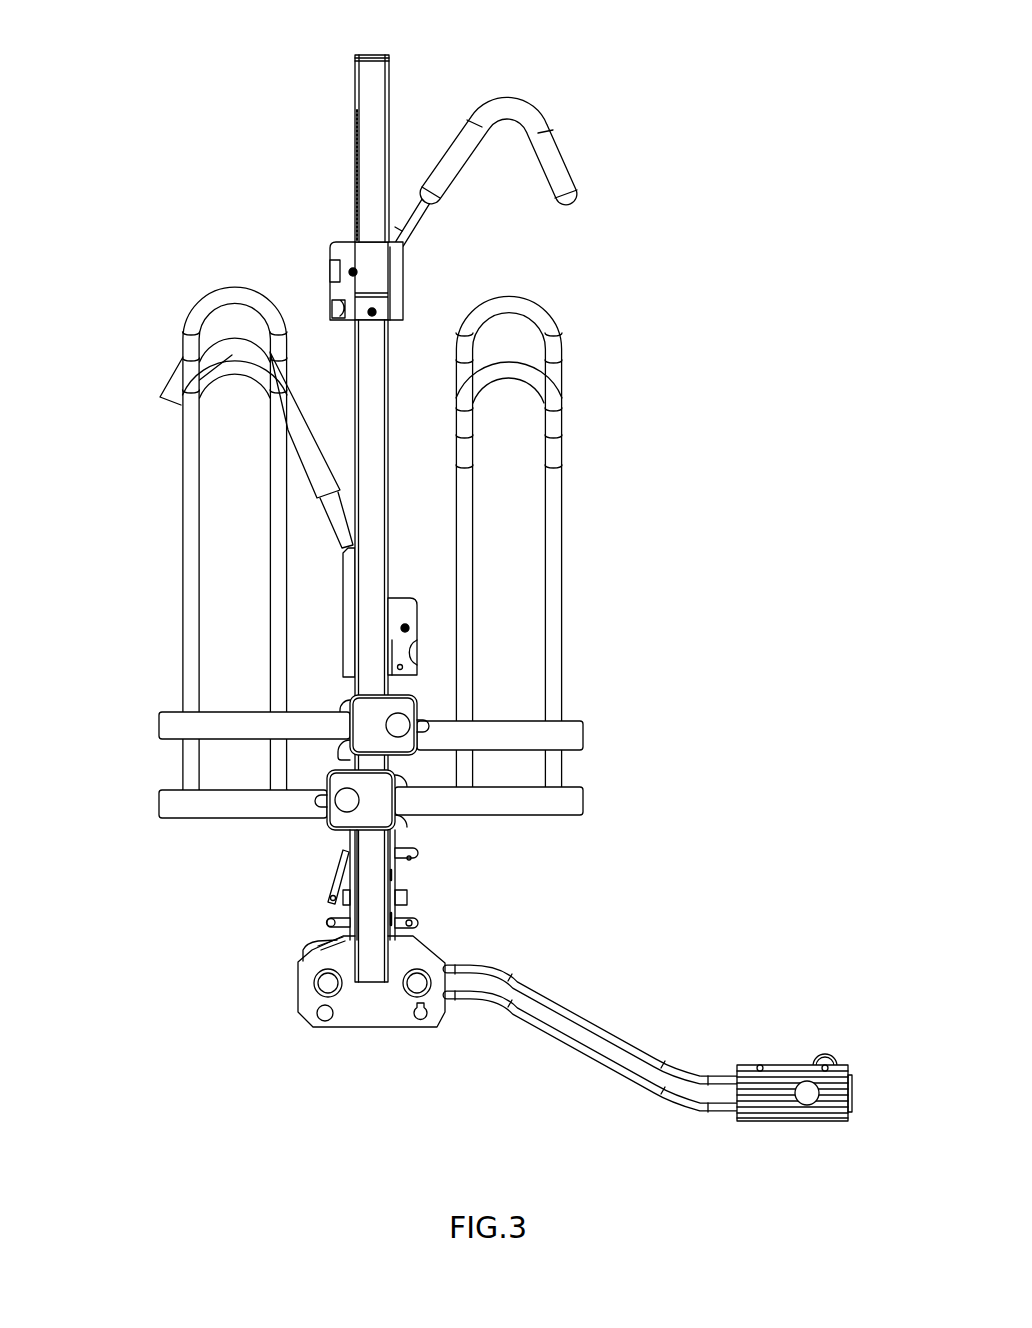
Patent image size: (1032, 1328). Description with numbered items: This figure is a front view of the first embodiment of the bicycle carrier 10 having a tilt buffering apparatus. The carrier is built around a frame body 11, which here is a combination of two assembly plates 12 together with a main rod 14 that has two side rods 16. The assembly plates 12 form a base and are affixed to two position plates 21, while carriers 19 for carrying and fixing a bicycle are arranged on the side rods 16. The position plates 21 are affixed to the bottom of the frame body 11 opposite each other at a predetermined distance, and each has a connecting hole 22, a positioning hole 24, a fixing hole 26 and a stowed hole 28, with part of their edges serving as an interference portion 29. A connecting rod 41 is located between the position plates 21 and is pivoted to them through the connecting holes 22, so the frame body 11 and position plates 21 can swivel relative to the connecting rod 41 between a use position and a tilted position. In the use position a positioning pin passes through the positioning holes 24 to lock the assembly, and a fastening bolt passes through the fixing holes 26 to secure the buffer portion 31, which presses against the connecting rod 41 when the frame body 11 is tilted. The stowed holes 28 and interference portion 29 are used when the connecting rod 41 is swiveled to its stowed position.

The bicycle carrier 10 is at (471, 566).
The frame body 11 is at (449, 497).
The assembly plates 12 is at (362, 957).
The main rod 14 is at (357, 88).
The side rods 16 is at (380, 345).
The carriers 19 is at (182, 520).
The position plates 21 is at (297, 978).
The connecting hole 22 is at (317, 993).
The positioning hole 24 is at (423, 975).
The fixing hole 26 is at (323, 1022).
The stowed hole 28 is at (423, 1017).
The interference portion 29 is at (302, 958).
The buffer portion 31 is at (320, 945).
The connecting rod 41 is at (622, 1038).